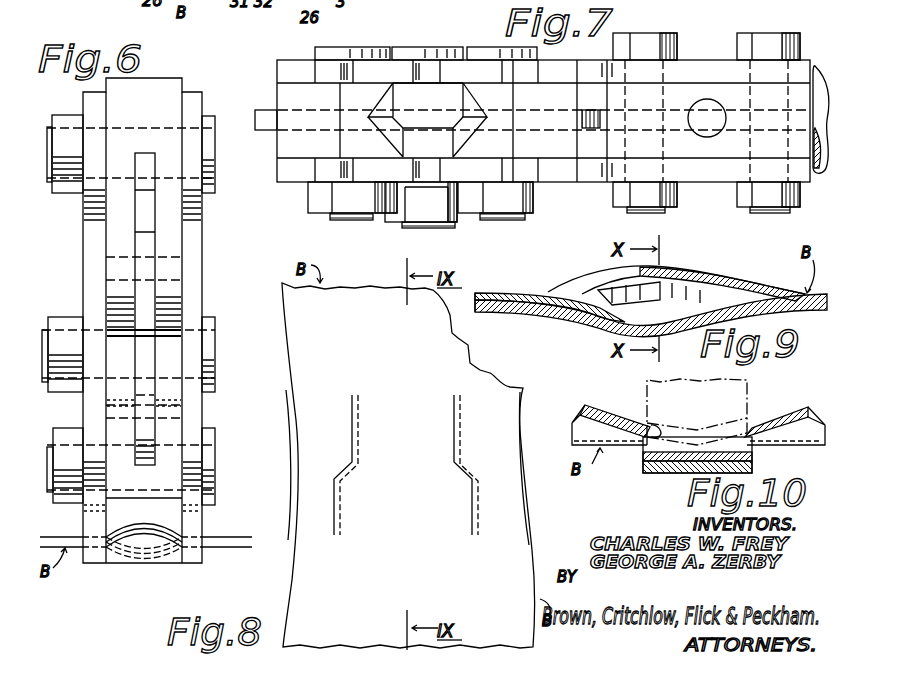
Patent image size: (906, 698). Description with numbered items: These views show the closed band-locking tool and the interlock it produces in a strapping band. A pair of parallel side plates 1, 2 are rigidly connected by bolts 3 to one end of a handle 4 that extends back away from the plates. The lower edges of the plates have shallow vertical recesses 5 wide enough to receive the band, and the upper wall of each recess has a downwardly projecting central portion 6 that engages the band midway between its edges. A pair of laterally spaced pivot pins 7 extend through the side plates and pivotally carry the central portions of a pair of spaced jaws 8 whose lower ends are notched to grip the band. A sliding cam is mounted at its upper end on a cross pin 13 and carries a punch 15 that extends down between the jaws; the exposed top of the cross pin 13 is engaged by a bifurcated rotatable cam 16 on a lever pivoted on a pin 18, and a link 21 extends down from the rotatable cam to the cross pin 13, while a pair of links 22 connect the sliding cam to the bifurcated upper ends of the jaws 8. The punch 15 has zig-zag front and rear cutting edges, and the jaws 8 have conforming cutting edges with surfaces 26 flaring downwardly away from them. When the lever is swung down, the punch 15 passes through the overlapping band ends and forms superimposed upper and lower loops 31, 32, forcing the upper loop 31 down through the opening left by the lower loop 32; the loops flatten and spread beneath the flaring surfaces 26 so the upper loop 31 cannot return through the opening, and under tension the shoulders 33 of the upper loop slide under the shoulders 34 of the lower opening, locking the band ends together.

In FIG. 6, the side plate 1 is at (197, 244).
In FIG. 7, the side plate 1 is at (288, 68).
In FIG. 6, the side plate 2 is at (92, 248).
In FIG. 7, the side plate 2 is at (287, 173).
In FIG. 7, the bolt 3 is at (740, 47).
In FIG. 7, the handle 4 is at (821, 70).
In FIG. 7, the recess 5 is at (486, 78).
In FIG. 7, the central portion 6 is at (417, 68).
In FIG. 6, the pivot pin 7 is at (210, 467).
In FIG. 7, the pivot pin 7 is at (350, 53).
In FIG. 6, the jaw 8 is at (115, 508).
In FIG. 7, the jaw 8 is at (292, 142).
In FIG. 6, the cross pin 13 is at (210, 357).
In FIG. 7, the cross pin 13 is at (422, 53).
In FIG. 7, the punch 15 is at (437, 106).
In FIG. 10, the punch 15 is at (742, 397).
In FIG. 6, the rotatable cam 16 is at (110, 210).
In FIG. 6, the pin 18 is at (208, 158).
In FIG. 6, the link 21 is at (147, 272).
In FIG. 6, the link 22 is at (147, 425).
In FIG. 7, the link 22 is at (265, 117).
In FIG. 7, the flaring surface 26 is at (383, 104).
In FIG. 6, the upper loop 31 is at (137, 552).
In FIG. 8, the upper loop 31 is at (448, 490).
In FIG. 9, the upper loop 31 is at (600, 320).
In FIG. 10, the upper loop 31 is at (728, 453).
In FIG. 6, the lower loop 32 is at (147, 557).
In FIG. 9, the lower loop 32 is at (622, 332).
In FIG. 10, the lower loop 32 is at (683, 468).
In FIG. 8, the shoulder 33 is at (473, 463).
In FIG. 10, the shoulder 33 is at (645, 468).
In FIG. 9, the shoulder 34 is at (650, 287).
In FIG. 10, the shoulder 34 is at (648, 425).